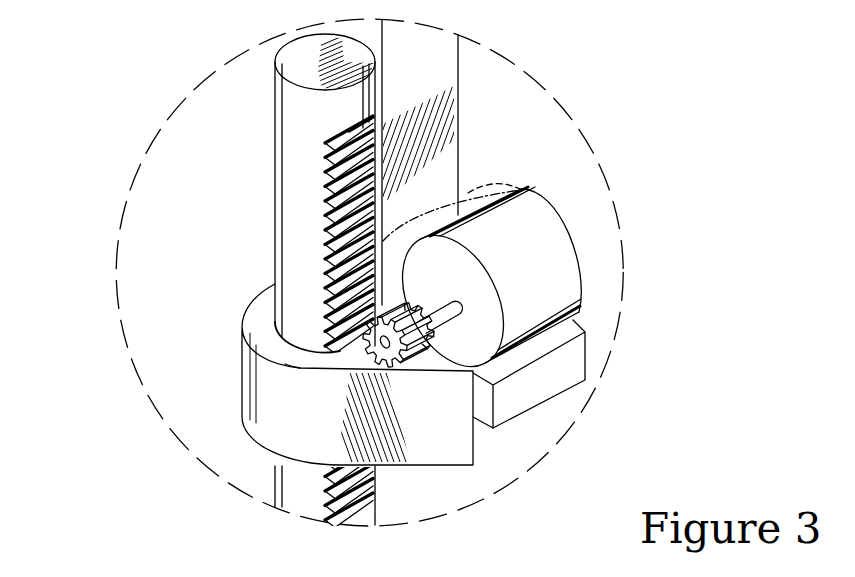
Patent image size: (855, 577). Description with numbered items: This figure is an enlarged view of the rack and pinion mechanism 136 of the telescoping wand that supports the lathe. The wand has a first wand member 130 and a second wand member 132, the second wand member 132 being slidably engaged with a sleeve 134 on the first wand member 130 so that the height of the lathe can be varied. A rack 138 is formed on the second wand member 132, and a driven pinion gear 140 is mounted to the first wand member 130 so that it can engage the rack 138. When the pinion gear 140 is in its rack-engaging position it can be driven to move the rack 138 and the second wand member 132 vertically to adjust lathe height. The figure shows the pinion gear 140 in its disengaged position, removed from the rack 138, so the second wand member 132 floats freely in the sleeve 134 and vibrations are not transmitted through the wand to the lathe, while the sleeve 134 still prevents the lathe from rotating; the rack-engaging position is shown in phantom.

The first wand member 130 is at (455, 78).
The second wand member 132 is at (273, 226).
The sleeve 134 is at (265, 423).
The rack and pinion mechanism 136 is at (297, 367).
The rack 138 is at (377, 220).
The driven pinion gear 140 is at (398, 348).